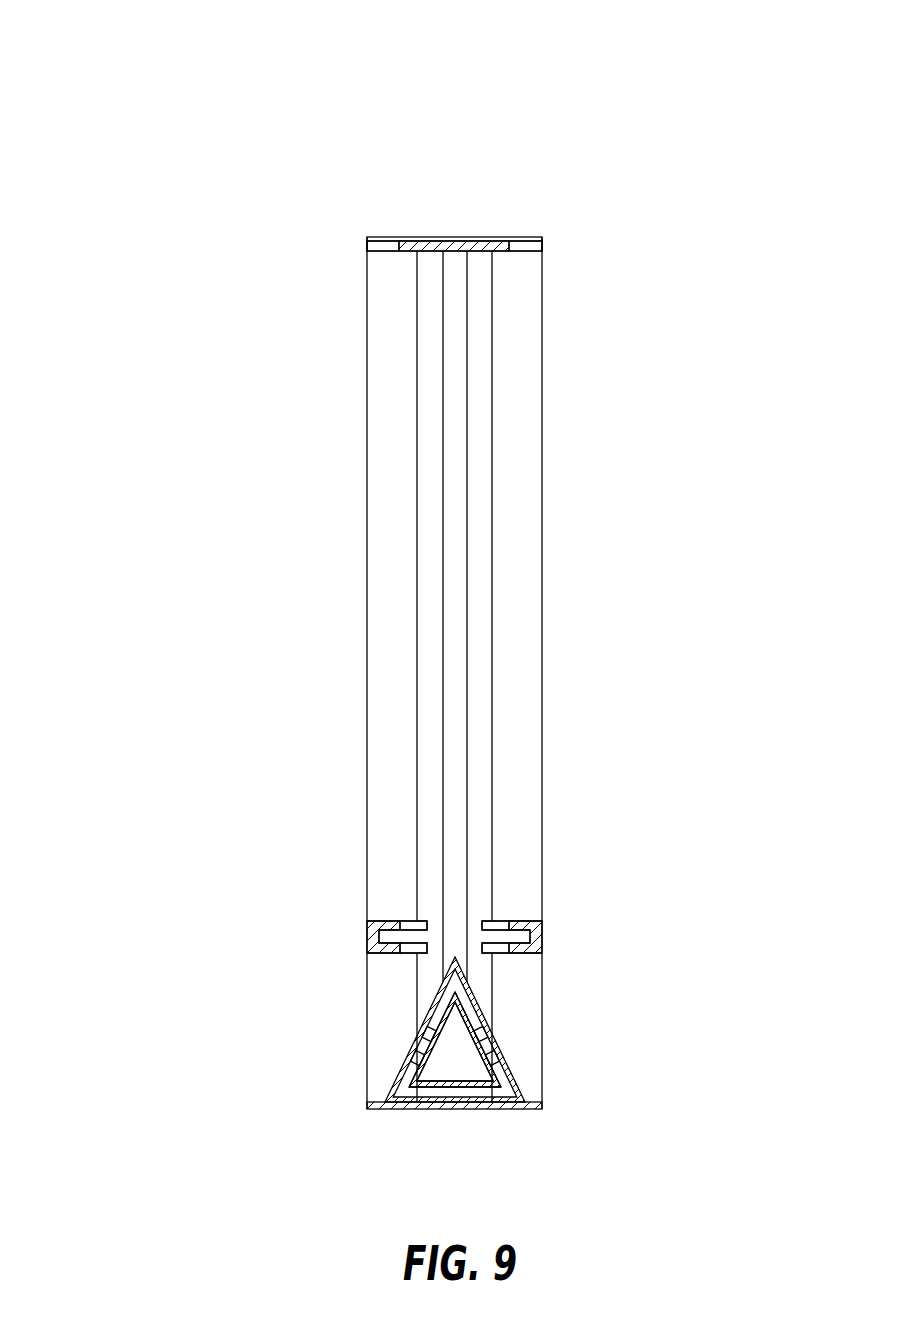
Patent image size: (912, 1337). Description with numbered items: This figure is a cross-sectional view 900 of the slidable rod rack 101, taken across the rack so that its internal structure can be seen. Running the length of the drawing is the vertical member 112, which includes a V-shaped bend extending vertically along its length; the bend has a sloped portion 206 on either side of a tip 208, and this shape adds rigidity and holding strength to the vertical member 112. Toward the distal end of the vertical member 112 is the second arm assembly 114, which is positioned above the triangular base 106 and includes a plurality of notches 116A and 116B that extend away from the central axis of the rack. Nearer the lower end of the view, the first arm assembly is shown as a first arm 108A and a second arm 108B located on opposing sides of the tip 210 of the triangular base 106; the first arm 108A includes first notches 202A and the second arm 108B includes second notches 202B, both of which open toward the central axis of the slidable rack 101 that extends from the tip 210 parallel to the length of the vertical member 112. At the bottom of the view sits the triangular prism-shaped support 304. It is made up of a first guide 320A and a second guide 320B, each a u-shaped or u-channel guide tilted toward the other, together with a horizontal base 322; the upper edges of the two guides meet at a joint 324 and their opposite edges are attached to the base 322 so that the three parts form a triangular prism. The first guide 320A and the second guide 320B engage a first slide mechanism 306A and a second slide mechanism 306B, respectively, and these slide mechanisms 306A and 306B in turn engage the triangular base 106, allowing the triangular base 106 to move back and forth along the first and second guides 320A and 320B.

The cross-sectional view 900 is at (102, 36).
The slidable rod rack 101 is at (488, 669).
The vertical member 112 is at (455, 673).
The second arm assembly 114 is at (448, 218).
The notch 116A is at (322, 236).
The notch 116B is at (580, 231).
The sloped portion 206 is at (373, 616).
The tip 208 is at (543, 616).
The tip 210 is at (554, 849).
The first notches 202A is at (303, 873).
The second notches 202B is at (564, 896).
The first arm 108A is at (303, 873).
The second arm 108B is at (599, 896).
The triangular base 106 is at (445, 1023).
The joint 324 is at (453, 1054).
The first guide 320A is at (373, 1037).
The second guide 320B is at (534, 1039).
The first slide mechanism 306A is at (364, 1042).
The second slide mechanism 306B is at (550, 1045).
The triangular prism-shaped support 304 is at (567, 1097).
The base 322 is at (460, 1087).